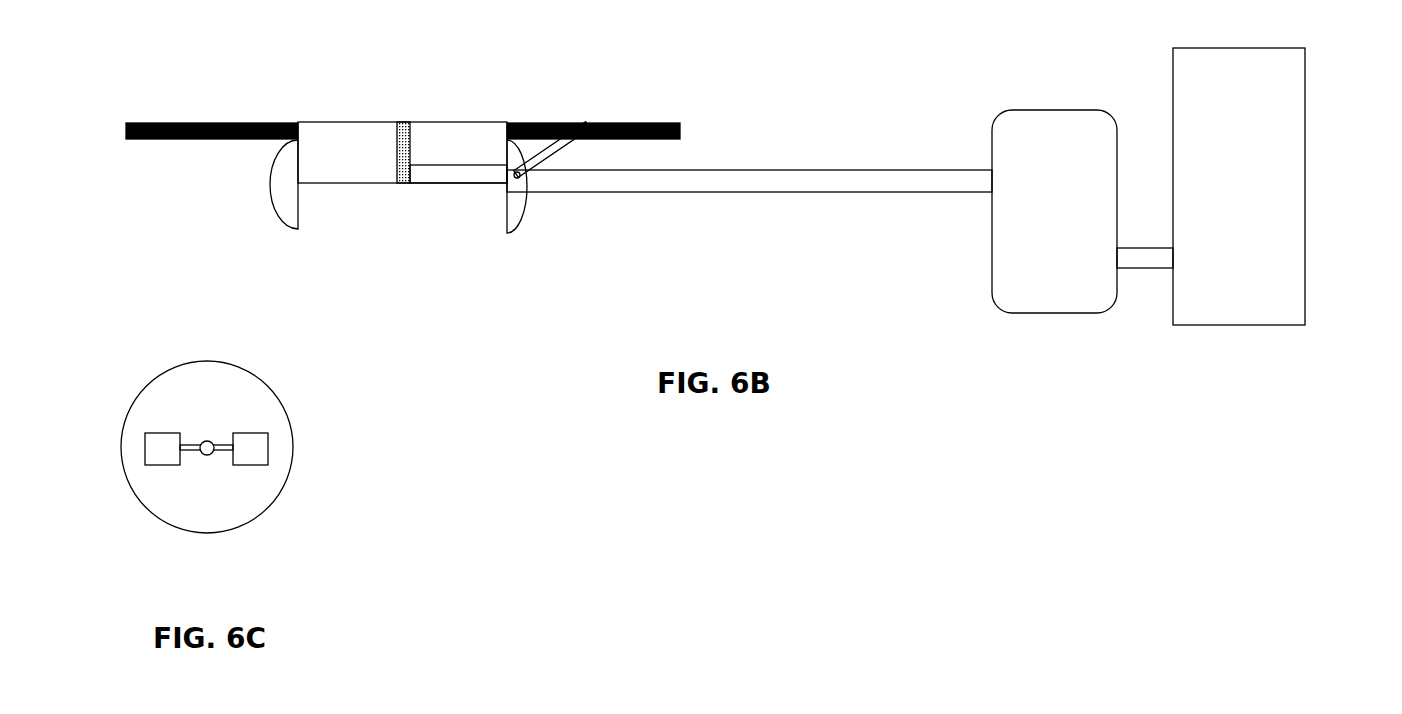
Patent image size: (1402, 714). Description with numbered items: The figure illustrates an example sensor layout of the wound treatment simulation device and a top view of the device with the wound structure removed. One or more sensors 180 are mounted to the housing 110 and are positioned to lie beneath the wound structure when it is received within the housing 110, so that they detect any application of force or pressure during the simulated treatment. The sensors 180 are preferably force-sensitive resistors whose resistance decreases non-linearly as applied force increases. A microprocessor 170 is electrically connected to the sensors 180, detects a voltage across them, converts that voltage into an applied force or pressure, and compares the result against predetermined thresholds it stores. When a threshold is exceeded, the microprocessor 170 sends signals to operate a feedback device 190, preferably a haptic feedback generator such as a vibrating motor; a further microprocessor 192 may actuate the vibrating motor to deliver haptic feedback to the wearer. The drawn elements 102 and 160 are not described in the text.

In FIG. 6B, the plate / mounting surface 102 is at (120, 128).
In FIG. 6B, the housing 110 is at (349, 116).
In FIG. 6C, the housing 110 is at (277, 396).
In FIG. 6B, the feedback device 190 is at (588, 116).
In FIG. 6B, the further microprocessor 192 is at (519, 182).
In FIG. 6B, the microprocessor 170 is at (988, 123).
In FIG. 6B, the controller unit 160 is at (1311, 89).
In FIG. 6C, the sensors 180 is at (162, 470).